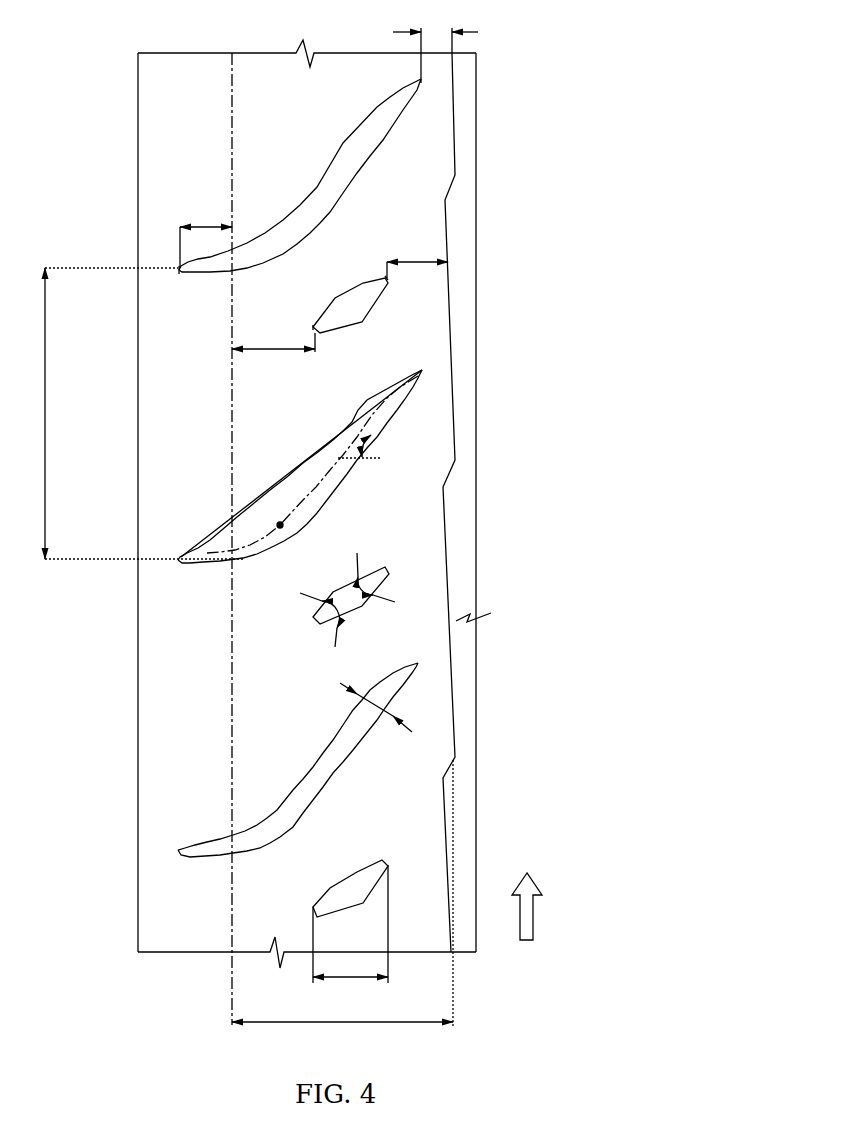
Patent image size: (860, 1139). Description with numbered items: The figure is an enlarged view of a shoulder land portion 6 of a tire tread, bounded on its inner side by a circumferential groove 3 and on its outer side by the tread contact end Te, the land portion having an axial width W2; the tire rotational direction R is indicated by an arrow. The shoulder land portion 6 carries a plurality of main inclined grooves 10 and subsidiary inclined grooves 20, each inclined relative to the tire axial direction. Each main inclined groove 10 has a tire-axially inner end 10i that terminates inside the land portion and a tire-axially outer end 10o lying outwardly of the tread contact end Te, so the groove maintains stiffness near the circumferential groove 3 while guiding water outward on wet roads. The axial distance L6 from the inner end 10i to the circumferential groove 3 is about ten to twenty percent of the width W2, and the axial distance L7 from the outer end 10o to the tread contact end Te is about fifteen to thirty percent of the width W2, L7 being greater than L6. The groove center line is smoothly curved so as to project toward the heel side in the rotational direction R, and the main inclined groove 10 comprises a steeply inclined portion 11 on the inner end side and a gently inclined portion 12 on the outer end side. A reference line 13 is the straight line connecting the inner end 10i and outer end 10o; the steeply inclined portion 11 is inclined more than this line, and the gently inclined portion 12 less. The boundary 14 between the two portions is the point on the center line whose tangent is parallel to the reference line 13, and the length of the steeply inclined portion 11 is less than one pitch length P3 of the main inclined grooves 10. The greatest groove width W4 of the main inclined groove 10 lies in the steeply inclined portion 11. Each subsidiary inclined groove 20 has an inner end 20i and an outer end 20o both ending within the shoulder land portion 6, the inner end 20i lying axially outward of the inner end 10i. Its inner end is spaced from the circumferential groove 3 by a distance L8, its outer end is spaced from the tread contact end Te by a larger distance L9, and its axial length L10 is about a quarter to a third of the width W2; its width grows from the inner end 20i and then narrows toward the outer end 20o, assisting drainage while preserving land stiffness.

The circumferential groove 3 is at (464, 115).
The shoulder land portion 6 is at (335, 82).
The main inclined groove 10 is at (311, 459).
The inner end of main inclined groove 10i is at (421, 80).
The outer end of main inclined groove 10o is at (180, 272).
The steeply inclined portion 11 is at (344, 165).
The gently inclined portion 12 is at (209, 263).
The reference line 13 is at (265, 497).
The boundary 14 is at (283, 526).
The subsidiary inclined groove 20 is at (304, 596).
The inner end of subsidiary inclined groove 20i is at (388, 278).
The outer end of subsidiary inclined groove 20o is at (314, 327).
The tread contact end Te is at (231, 91).
The distance from inner end of main inclined groove to circumferential groove L6 is at (435, 41).
The distance from outer end of main inclined groove to tread contact end L7 is at (202, 226).
The distance from inner end of subsidiary inclined groove to circumferential groove L8 is at (420, 261).
The distance from outer end of subsidiary inclined groove to tread contact end L9 is at (278, 352).
The pitch length P3 is at (129, 413).
The length of subsidiary inclined groove L10 is at (350, 935).
The width of shoulder land portion W2 is at (342, 906).
The greatest groove width W4 is at (368, 705).
The tire rotational direction R is at (527, 894).